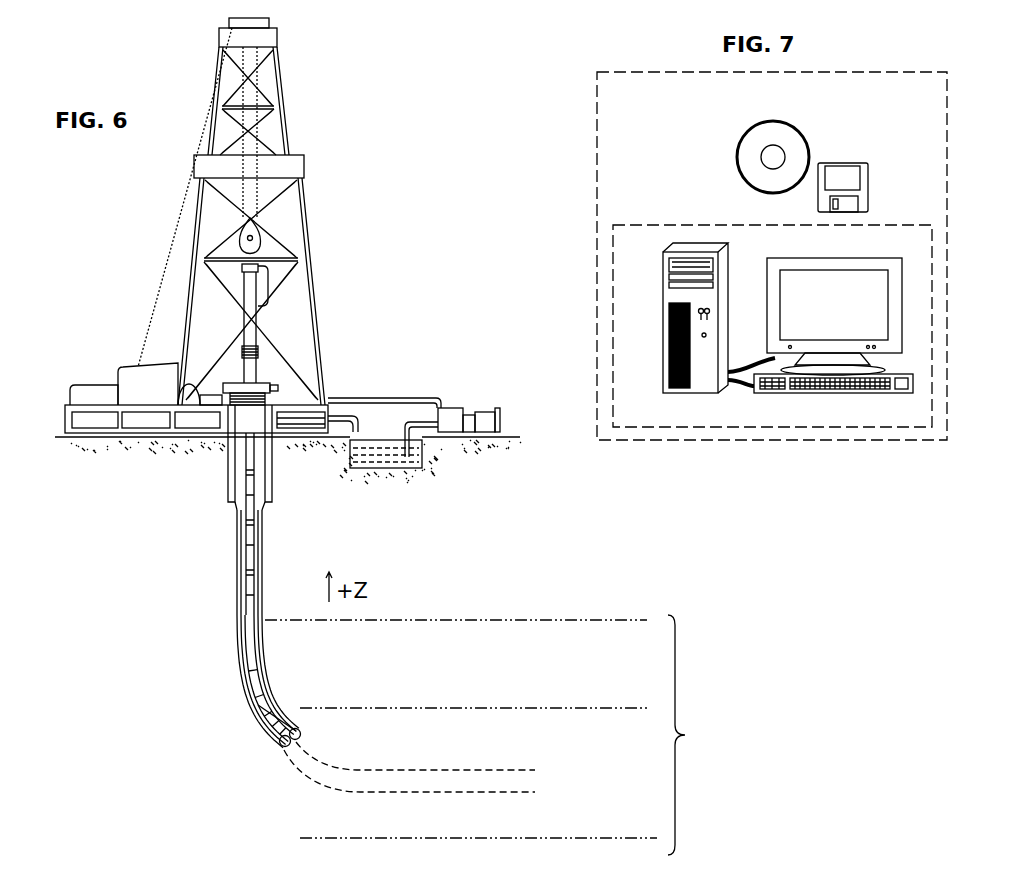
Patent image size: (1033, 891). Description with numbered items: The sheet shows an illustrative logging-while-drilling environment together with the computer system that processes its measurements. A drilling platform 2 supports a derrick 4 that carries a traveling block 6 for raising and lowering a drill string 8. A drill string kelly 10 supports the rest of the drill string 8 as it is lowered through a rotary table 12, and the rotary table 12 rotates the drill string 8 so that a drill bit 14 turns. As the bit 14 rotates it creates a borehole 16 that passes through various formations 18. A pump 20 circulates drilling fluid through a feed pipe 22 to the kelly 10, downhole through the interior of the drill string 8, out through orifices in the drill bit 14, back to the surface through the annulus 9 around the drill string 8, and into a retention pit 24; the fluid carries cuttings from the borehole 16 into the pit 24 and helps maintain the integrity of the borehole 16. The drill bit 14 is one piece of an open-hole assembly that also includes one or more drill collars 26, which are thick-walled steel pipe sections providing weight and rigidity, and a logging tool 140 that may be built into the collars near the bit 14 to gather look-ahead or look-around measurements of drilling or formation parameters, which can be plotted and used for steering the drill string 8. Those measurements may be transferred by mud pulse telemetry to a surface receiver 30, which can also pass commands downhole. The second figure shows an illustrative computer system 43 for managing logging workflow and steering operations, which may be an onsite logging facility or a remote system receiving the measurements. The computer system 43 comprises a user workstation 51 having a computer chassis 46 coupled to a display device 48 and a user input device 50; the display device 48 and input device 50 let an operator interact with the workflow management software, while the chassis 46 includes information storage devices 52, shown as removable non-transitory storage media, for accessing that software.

In FIG. 6, the drilling platform 2 is at (65, 413).
In FIG. 6, the derrick 4 is at (290, 140).
In FIG. 6, the traveling block 6 is at (262, 238).
In FIG. 6, the drill string 8 is at (254, 547).
In FIG. 6, the annulus 9 is at (240, 548).
In FIG. 6, the drill string kelly 10 is at (249, 295).
In FIG. 6, the rotary table 12 is at (265, 383).
In FIG. 6, the drill bit 14 is at (298, 732).
In FIG. 6, the borehole 16 is at (264, 552).
In FIG. 6, the formations 18 is at (492, 735).
In FIG. 6, the pump 20 is at (448, 412).
In FIG. 6, the feed pipe 22 is at (397, 397).
In FIG. 6, the retention pit 24 is at (365, 457).
In FIG. 6, the drill collars 26 is at (276, 733).
In FIG. 6, the surface receiver 30 is at (257, 348).
In FIG. 6, the logging tool 140 is at (257, 700).
In FIG. 7, the computer system 43 is at (932, 107).
In FIG. 7, the computer chassis 46 is at (727, 333).
In FIG. 7, the display device 48 is at (892, 352).
In FIG. 7, the user input device 50 is at (893, 395).
In FIG. 7, the user workstation 51 is at (655, 261).
In FIG. 7, the information storage devices 52 is at (828, 163).